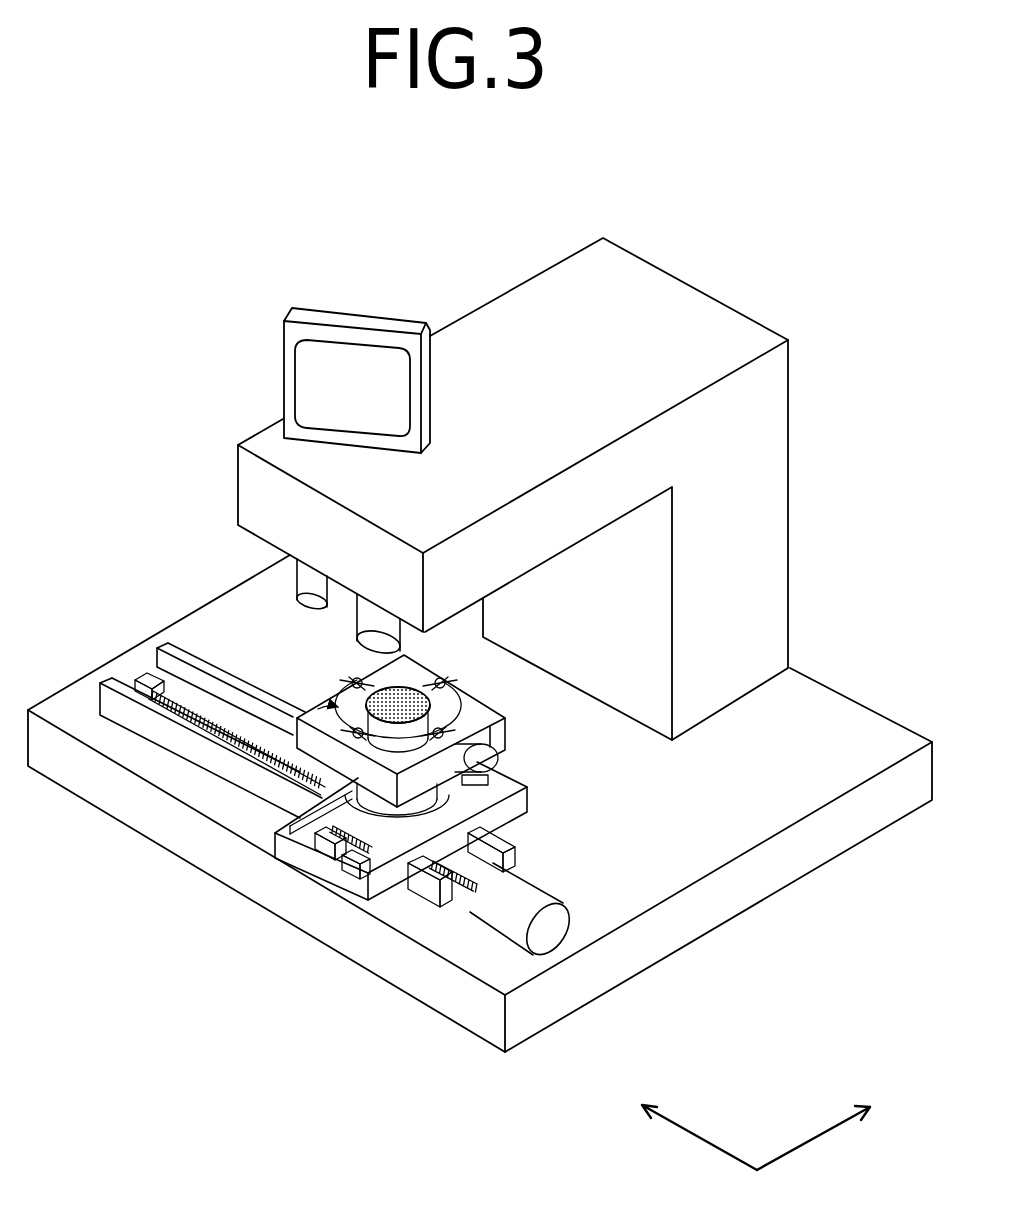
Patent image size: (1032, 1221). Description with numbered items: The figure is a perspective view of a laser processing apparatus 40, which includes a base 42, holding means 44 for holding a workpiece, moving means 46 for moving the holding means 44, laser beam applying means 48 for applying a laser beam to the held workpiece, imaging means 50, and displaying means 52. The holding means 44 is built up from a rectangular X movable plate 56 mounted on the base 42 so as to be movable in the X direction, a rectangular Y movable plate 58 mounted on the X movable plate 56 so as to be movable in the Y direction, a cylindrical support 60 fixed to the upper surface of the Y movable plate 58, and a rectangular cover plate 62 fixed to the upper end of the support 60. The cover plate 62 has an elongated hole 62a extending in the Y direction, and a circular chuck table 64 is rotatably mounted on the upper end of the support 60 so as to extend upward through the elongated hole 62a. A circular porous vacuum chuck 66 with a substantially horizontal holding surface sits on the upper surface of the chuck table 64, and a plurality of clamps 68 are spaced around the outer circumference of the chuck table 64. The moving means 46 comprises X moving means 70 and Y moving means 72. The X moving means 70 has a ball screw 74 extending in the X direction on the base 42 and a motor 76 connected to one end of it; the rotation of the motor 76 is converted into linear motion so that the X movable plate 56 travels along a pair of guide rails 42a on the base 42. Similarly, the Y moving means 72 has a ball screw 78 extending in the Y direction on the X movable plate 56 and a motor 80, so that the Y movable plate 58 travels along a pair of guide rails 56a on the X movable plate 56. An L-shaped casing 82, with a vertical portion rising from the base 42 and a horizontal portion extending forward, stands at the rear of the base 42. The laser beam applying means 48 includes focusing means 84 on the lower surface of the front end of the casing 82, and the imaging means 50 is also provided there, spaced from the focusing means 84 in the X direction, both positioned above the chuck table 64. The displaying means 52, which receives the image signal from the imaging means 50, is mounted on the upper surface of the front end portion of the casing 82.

The laser processing apparatus 40 is at (145, 357).
The base 42 is at (850, 718).
The guide rails 42a is at (160, 646).
The holding means 44 is at (299, 887).
The moving means 46 is at (494, 853).
The laser beam applying means 48 is at (300, 597).
The imaging means 50 is at (378, 628).
The displaying means 52 is at (372, 322).
The X movable plate 56 is at (260, 897).
The guide rails 56a is at (300, 830).
The Y movable plate 58 is at (432, 808).
The support 60 is at (416, 745).
The cover plate 62 is at (366, 912).
The elongated hole 62a is at (362, 836).
The chuck table 64 is at (340, 730).
The vacuum chuck 66 is at (374, 762).
The clamps 68 is at (364, 859).
The X moving means 70 is at (524, 892).
The Y moving means 72 is at (465, 789).
The ball screw 74 is at (497, 839).
The motor 76 is at (526, 911).
The ball screw 78 is at (500, 799).
The motor 80 is at (487, 762).
The L-shaped casing 82 is at (768, 457).
The focusing means 84 is at (300, 607).